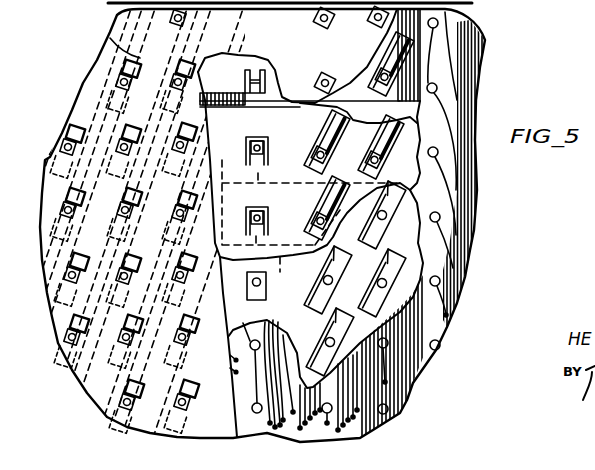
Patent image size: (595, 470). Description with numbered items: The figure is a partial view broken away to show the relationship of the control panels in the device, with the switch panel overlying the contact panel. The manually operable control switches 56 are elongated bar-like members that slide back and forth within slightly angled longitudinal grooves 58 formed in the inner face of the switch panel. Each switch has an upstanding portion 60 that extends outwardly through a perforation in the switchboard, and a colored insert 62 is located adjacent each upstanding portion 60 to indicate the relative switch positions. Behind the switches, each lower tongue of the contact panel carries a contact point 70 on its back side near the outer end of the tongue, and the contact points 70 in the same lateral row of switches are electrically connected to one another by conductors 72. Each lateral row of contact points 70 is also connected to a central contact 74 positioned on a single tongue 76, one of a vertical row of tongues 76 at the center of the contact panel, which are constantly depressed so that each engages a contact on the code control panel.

The manually operable control switch 56 is at (110, 38).
The longitudinal groove 58 is at (97, 70).
The upstanding portion 60 is at (70, 326).
The colored insert 62 is at (64, 210).
The contact point 70 is at (318, 127).
The conductor 72 is at (384, 153).
The central contact 74 is at (253, 206).
The tongue 76 is at (267, 157).